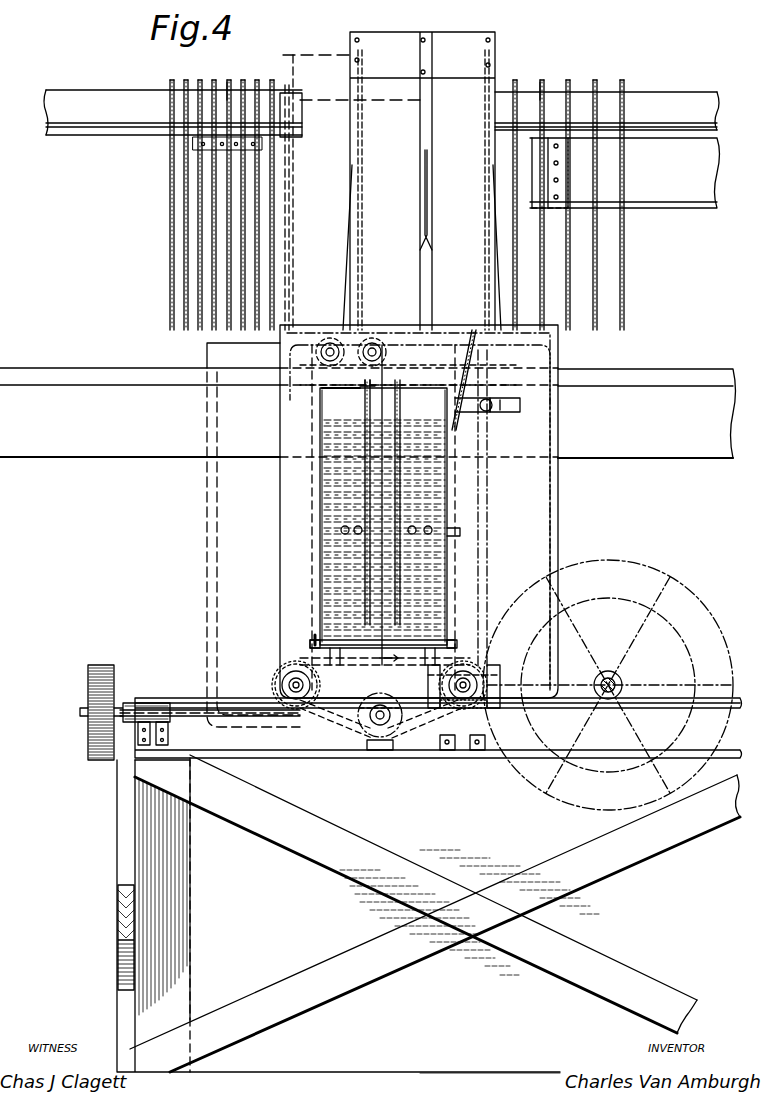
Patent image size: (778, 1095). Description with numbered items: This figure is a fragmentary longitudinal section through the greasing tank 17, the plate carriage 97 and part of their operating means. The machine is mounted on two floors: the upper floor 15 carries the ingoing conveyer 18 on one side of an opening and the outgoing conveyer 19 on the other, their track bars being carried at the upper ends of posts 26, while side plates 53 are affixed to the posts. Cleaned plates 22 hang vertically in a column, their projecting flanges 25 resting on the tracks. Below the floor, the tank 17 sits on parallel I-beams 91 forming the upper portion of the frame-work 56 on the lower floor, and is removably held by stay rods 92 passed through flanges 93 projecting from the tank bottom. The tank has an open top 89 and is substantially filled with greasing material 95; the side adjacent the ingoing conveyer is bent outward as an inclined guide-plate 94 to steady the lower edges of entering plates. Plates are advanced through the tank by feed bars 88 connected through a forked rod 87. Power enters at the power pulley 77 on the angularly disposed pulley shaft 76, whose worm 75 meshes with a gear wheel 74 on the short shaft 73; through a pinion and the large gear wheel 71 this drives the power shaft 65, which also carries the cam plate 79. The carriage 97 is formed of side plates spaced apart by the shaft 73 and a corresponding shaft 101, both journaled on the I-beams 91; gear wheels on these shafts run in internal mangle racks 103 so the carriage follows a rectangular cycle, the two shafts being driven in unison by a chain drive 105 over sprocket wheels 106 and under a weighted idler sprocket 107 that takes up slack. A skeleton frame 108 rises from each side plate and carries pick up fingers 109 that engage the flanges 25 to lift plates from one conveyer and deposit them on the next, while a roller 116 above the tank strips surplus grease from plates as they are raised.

The upper floor 15 is at (640, 372).
The greasing tank 17 is at (351, 192).
The ingoing conveyer 18 is at (607, 97).
The outgoing conveyer 19 is at (173, 107).
The plates 22 is at (169, 260).
The projecting flanges 25 is at (244, 86).
The posts 26 is at (207, 345).
The side plates 53 is at (625, 173).
The frame-work 56 is at (380, 908).
The power shaft 65 is at (608, 671).
The gear wheel 71 is at (708, 608).
The short shaft 73 is at (463, 670).
The gear wheel 74 is at (446, 684).
The worm 75 is at (468, 752).
The pulley shaft 76 is at (138, 703).
The power pulley 77 is at (100, 665).
The cam plate 79 is at (690, 662).
The forked rod 87 is at (510, 412).
The feed bars 88 is at (468, 412).
The open top 89 is at (357, 388).
The I-beams 91 is at (276, 742).
The stay rods 92 is at (312, 644).
The flanges 93 is at (316, 638).
The inclined guide-plate 94 is at (472, 338).
The greasing material 95 is at (320, 440).
The plate carriage 97 is at (548, 480).
The shaft 101 is at (282, 683).
The internal mangle racks 103 is at (282, 512).
The chain drive 105 is at (333, 736).
The sprocket wheels 106 is at (282, 665).
The weighted idler sprocket 107 is at (368, 780).
The skeleton frame 108 is at (352, 181).
The pick up finger 109 is at (358, 66).
The roller 116 is at (331, 338).